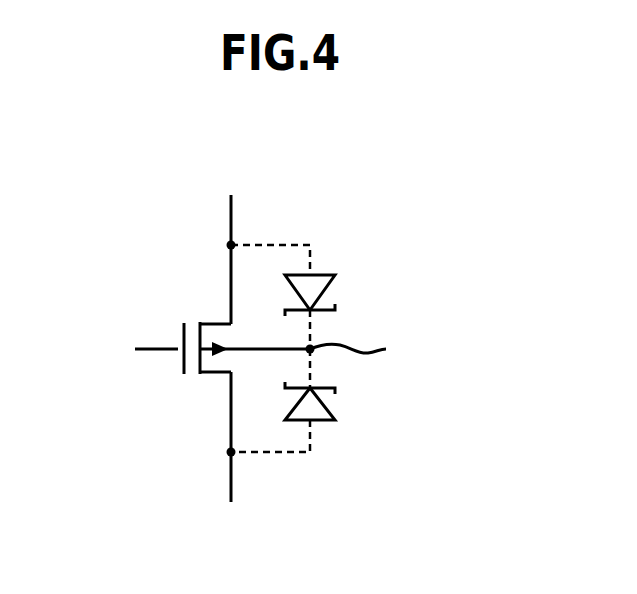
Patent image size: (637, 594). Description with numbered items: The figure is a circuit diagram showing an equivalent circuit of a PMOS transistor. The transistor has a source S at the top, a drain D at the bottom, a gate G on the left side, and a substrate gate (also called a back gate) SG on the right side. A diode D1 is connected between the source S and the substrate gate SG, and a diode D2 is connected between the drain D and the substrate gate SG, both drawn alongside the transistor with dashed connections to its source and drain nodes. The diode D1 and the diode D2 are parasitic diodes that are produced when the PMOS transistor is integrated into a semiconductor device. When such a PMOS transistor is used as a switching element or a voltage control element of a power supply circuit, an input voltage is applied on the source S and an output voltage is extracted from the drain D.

The source S is at (232, 237).
The drain D is at (233, 460).
The gate G is at (140, 348).
The substrate gate SG is at (371, 348).
The diode D1 is at (310, 297).
The diode D2 is at (309, 400).